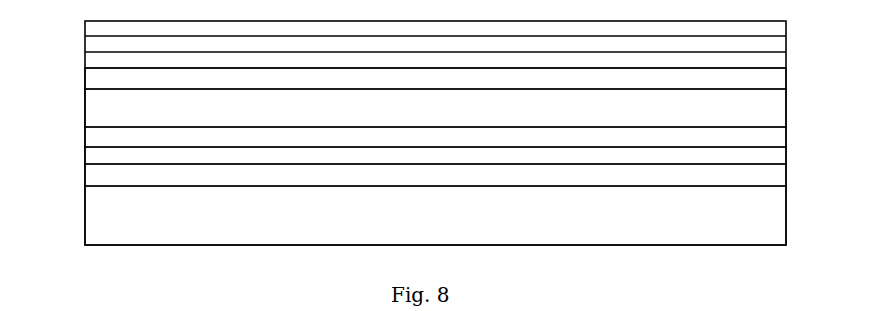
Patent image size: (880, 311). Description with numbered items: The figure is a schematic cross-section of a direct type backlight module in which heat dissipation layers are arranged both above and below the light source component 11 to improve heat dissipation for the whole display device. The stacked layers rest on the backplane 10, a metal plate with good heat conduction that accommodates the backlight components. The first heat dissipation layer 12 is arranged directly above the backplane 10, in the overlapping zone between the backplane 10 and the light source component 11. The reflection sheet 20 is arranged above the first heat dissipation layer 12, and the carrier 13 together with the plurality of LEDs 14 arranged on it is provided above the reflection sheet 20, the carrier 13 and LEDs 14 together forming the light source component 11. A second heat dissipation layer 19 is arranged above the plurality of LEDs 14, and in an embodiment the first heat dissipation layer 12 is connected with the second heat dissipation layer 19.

The backplane 10 is at (112, 228).
The light source component 11 is at (794, 95).
The first heat dissipation layer 12 is at (112, 179).
The carrier 13 is at (112, 138).
The LEDs 14 is at (112, 114).
The second heat dissipation layer 19 is at (112, 83).
The reflection sheet 20 is at (112, 157).